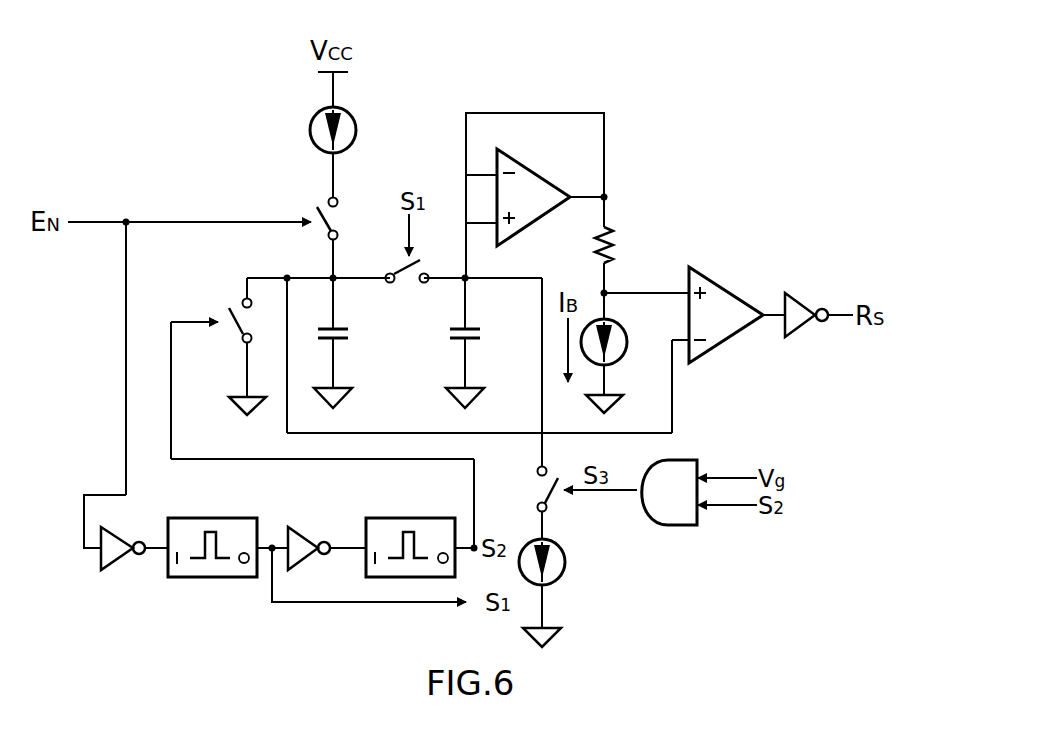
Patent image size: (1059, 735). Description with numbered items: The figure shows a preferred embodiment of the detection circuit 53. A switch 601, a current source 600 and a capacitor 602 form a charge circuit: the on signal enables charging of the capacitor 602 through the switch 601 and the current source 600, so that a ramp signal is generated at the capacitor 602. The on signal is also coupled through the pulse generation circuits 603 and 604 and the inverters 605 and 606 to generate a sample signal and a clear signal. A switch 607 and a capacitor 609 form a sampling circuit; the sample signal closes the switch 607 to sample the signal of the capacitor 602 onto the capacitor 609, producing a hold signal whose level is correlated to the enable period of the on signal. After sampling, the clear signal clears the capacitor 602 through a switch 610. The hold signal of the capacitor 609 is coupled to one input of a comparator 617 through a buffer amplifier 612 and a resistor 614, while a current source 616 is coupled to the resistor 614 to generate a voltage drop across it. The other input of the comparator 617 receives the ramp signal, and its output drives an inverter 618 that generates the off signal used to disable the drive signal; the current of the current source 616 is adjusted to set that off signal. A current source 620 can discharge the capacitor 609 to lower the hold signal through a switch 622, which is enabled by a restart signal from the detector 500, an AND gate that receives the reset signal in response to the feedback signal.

The detection circuit 53 is at (785, 52).
The detector 500 is at (688, 459).
The current source 600 is at (361, 133).
The switch 601 is at (344, 221).
The capacitor 602 is at (355, 333).
The pulse generation circuit 603 is at (179, 518).
The pulse generation circuit 604 is at (378, 518).
The inverter 605 is at (122, 565).
The inverter 606 is at (297, 527).
The switch 607 is at (404, 284).
The capacitor 609 is at (487, 333).
The switch 610 is at (226, 331).
The buffer amplifier 612 is at (520, 160).
The resistor 614 is at (619, 243).
The current source 616 is at (631, 341).
The comparator 617 is at (707, 272).
The inverter 618 is at (798, 336).
The current source 620 is at (568, 556).
The switch 622 is at (536, 478).